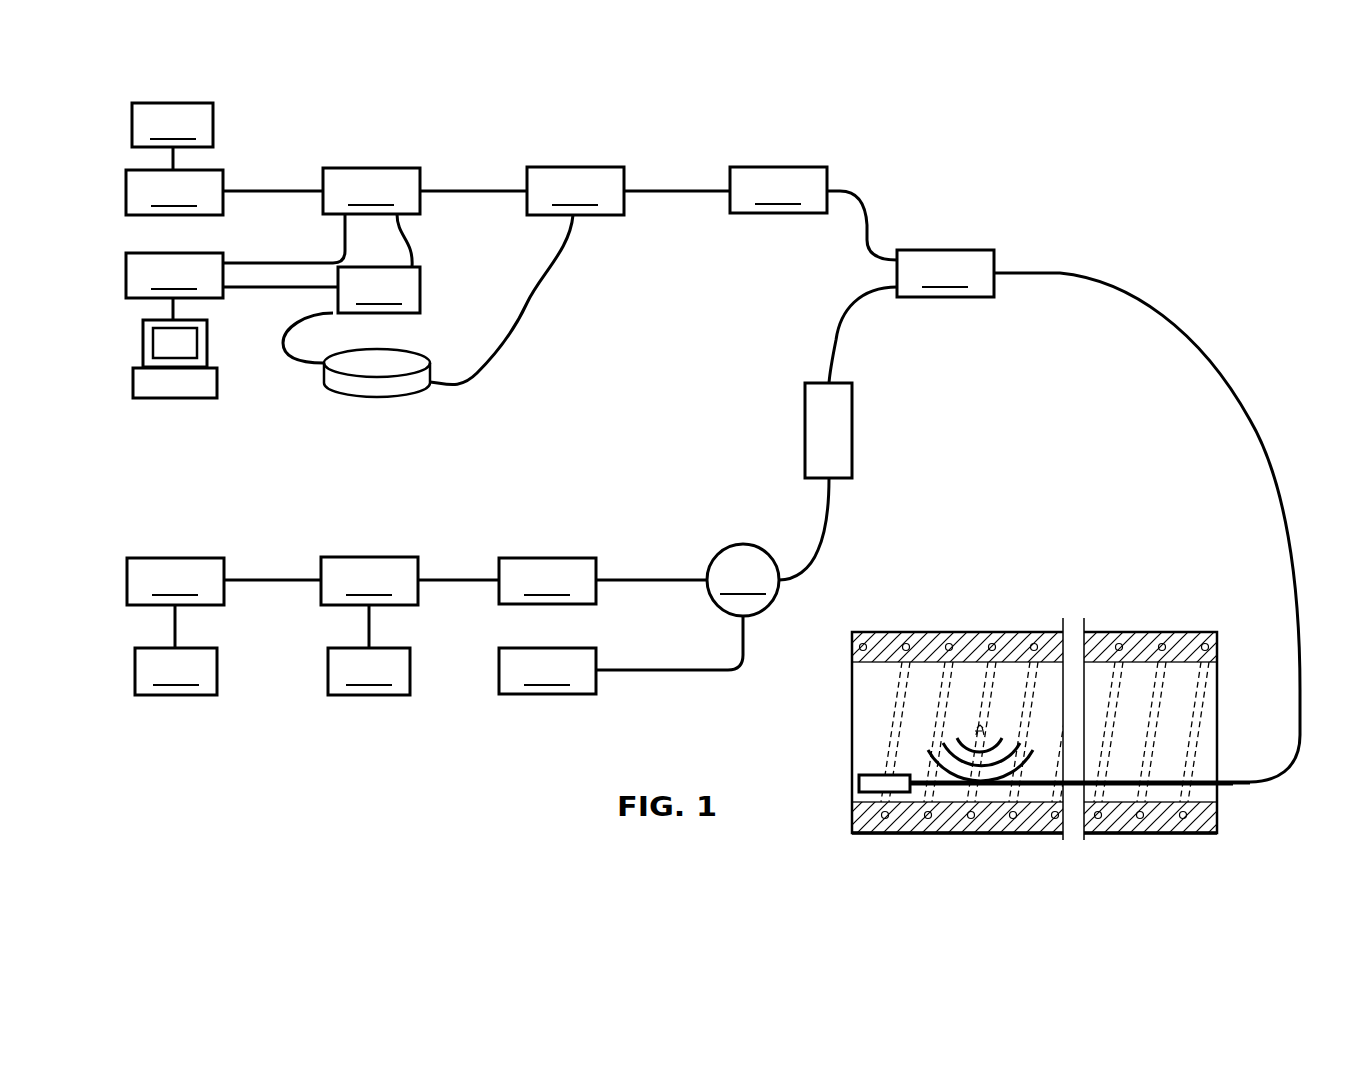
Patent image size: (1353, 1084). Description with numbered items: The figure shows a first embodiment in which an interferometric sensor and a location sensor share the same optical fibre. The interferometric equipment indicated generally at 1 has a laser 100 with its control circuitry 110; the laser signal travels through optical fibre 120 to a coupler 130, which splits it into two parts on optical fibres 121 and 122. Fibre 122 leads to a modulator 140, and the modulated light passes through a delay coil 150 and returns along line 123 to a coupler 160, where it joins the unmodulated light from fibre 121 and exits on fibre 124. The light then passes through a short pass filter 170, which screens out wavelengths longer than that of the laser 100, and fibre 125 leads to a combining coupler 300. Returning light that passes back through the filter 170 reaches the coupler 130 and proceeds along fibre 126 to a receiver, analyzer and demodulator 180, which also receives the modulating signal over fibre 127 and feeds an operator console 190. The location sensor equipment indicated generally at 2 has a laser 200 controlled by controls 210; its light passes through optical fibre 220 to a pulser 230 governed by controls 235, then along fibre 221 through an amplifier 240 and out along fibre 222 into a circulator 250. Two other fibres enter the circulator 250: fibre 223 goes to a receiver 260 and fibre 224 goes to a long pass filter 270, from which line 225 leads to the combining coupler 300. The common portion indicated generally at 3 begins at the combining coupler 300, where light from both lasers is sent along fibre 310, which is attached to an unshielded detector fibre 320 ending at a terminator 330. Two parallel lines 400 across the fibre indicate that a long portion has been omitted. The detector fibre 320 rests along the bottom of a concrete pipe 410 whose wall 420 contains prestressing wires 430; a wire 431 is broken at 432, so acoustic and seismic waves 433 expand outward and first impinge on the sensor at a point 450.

The interferometric sensor equipment 1 is at (278, 418).
The location sensor equipment 2 is at (236, 522).
The common equipment and sensing portion 3 is at (1175, 528).
The laser 100 is at (174, 192).
The control circuitry 110 is at (172, 136).
The optical fibre 120 is at (273, 191).
The optical fibre 121 is at (478, 191).
The optical fibre 122 is at (406, 237).
The line 123 is at (533, 302).
The fibre 124 is at (677, 191).
The fibre 125 is at (860, 200).
The fibre 126 is at (270, 263).
The fibre 127 is at (258, 287).
The coupler 130 is at (371, 191).
The modulator 140 is at (379, 290).
The delay coil 150 is at (377, 397).
The coupler 160 is at (575, 191).
The short pass filter 170 is at (778, 190).
The receiver, analyzer and demodulator 180 is at (174, 286).
The operator console 190 is at (143, 343).
The laser 200 is at (175, 603).
The controls 210 is at (176, 671).
The optical fibre 220 is at (273, 580).
The fibre 221 is at (455, 580).
The fibre 222 is at (643, 580).
The fibre 223 is at (743, 643).
The fibre 224 is at (827, 537).
The line 225 is at (837, 343).
The pulser 230 is at (369, 602).
The controls 235 is at (369, 671).
The amplifier 240 is at (547, 581).
The circulator 250 is at (743, 580).
The receiver 260 is at (547, 671).
The long pass filter 270 is at (805, 415).
The combining coupler 300 is at (945, 273).
The fibre 310 is at (1080, 277).
The detector fibre 320 is at (1227, 786).
The terminator 330 is at (859, 785).
The parallel lines 400 is at (1035, 739).
The concrete pipe 410 is at (1035, 739).
The wall 420 is at (1136, 632).
The prestressing wires 430 is at (895, 722).
The wire 431 is at (990, 688).
The break 432 is at (980, 729).
The acoustic and seismic waves 433 is at (1030, 755).
The point 450 is at (980, 783).